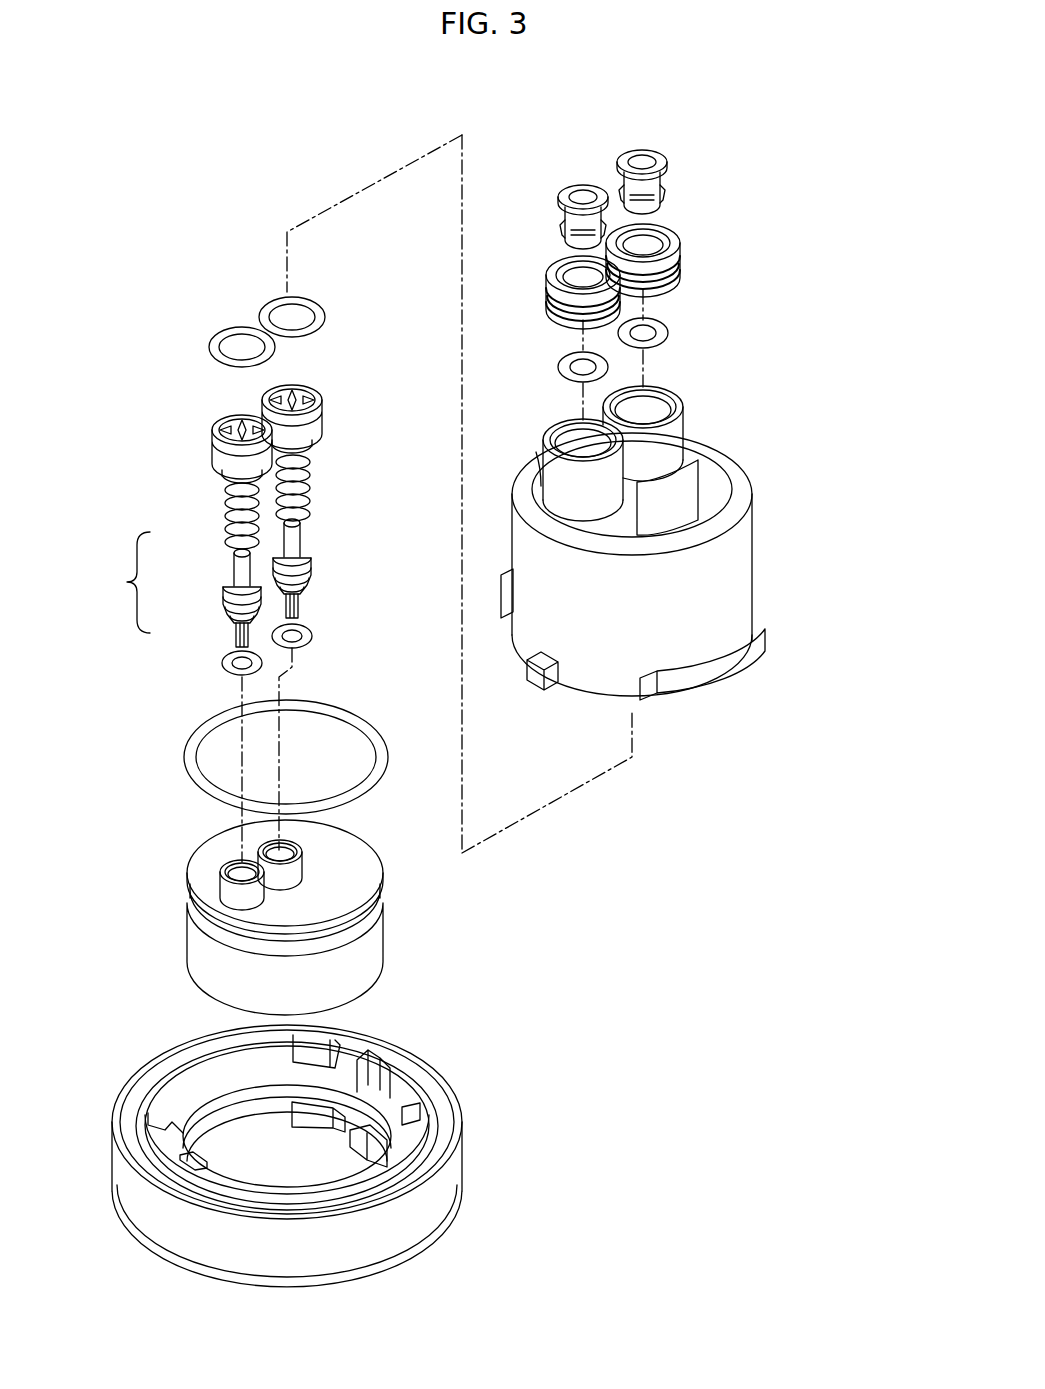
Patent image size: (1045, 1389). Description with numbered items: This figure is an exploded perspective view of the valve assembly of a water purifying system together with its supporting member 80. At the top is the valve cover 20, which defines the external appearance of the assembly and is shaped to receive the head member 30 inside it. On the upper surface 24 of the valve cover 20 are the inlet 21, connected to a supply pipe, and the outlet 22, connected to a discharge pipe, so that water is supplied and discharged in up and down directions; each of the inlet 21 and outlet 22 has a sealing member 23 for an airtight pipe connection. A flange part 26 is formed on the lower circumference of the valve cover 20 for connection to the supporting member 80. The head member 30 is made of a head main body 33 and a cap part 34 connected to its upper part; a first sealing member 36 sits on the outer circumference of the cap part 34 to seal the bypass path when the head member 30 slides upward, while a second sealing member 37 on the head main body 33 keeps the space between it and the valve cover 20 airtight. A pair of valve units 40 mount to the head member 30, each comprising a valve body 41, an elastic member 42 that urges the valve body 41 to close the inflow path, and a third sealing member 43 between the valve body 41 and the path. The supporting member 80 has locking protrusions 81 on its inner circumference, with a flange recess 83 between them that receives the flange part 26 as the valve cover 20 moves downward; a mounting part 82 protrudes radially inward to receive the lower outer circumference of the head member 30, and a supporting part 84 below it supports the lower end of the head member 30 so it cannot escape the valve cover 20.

The valve cover 20 is at (768, 557).
The inlet 21 is at (562, 196).
The outlet 22 is at (646, 155).
The sealing member 23 is at (668, 322).
The upper surface 24 is at (695, 440).
The flange part 26 is at (501, 590).
The head member 30 is at (339, 904).
The head main body 33 is at (350, 836).
The cap part 34 is at (212, 450).
The first sealing member 36 is at (210, 349).
The second sealing member 37 is at (192, 768).
The valve unit 40 is at (203, 565).
The valve body 41 is at (228, 597).
The elastic member 42 is at (228, 525).
The third sealing member 43 is at (224, 660).
The supporting member 80 is at (340, 1121).
The locking protrusion 81 is at (340, 1038).
The mounting part 82 is at (380, 1058).
The flange recess 83 is at (185, 1070).
The supporting part 84 is at (368, 1148).